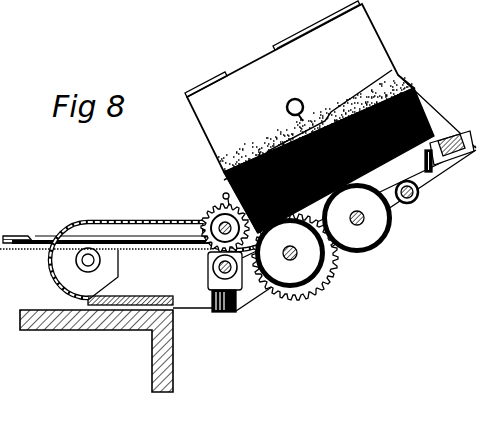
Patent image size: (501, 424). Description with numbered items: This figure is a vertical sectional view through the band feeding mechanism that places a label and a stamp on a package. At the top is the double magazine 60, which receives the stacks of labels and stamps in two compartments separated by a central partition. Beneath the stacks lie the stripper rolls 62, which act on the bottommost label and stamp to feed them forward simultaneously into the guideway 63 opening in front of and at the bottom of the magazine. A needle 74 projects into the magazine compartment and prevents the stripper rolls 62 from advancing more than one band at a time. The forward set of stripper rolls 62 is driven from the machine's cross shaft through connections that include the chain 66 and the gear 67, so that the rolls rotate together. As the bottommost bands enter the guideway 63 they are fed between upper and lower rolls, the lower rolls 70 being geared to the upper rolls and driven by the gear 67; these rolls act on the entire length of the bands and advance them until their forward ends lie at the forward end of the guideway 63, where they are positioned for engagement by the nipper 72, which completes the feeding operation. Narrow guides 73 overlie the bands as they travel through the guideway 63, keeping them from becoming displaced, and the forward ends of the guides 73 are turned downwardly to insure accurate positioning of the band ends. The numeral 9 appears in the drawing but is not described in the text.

The shaft axis 9 is at (208, 328).
The double magazine 60 is at (374, 42).
The stripper rolls 62 is at (360, 260).
The guideway 63 is at (161, 248).
The chain 66 is at (126, 223).
The gear 67 is at (291, 294).
The lower rolls 70 is at (212, 270).
The nipper 72 is at (21, 240).
The narrow guides 73 is at (56, 240).
The needles 74 is at (452, 140).